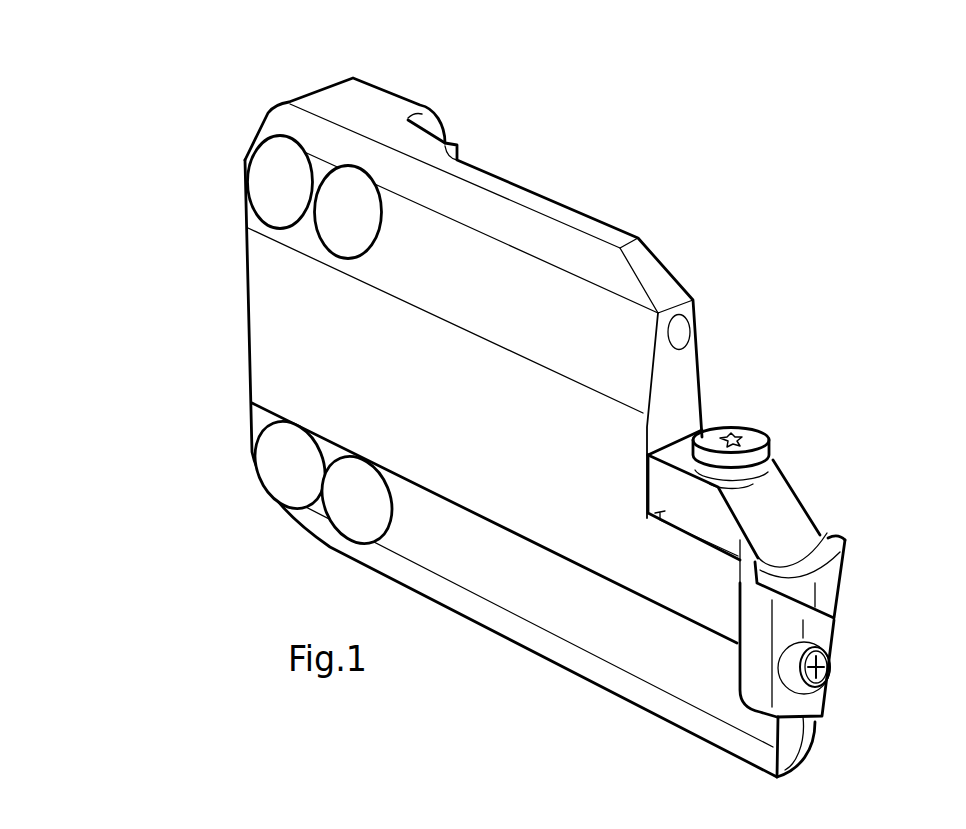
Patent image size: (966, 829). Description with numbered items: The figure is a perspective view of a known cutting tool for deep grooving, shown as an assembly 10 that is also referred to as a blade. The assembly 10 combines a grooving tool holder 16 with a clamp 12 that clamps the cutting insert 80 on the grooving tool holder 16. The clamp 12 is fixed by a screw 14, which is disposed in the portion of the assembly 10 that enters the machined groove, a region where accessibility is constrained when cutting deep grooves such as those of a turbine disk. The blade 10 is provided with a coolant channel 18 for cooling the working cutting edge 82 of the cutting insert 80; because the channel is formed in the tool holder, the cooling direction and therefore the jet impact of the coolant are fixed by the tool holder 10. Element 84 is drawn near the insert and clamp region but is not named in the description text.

The assembly 10 is at (836, 330).
The clamp 12 is at (787, 500).
The screw 14 is at (760, 448).
The grooving tool holder 16 is at (210, 299).
The coolant channel 18 is at (683, 331).
The cutting insert 80 is at (842, 553).
The working cutting edge 82 is at (835, 585).
The flange 84 is at (826, 538).